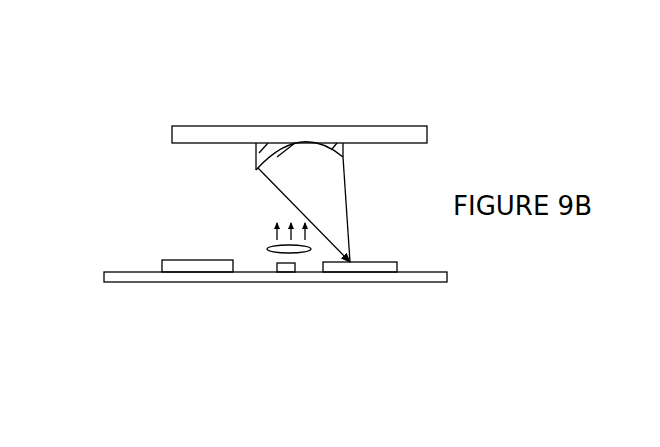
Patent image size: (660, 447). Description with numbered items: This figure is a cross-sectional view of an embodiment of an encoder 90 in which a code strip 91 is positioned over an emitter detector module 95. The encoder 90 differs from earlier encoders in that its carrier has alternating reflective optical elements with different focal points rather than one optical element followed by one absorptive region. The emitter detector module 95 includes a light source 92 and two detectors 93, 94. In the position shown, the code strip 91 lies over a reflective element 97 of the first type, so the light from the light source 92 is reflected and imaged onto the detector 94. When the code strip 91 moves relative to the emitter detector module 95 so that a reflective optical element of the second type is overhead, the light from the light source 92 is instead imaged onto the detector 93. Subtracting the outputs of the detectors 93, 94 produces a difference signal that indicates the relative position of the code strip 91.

The encoder 90 is at (167, 115).
The code strip 91 is at (342, 132).
The light source 92 is at (286, 270).
The detector 93 is at (200, 268).
The detector 94 is at (388, 268).
The emitter detector module 95 is at (420, 280).
The reflective element of the first type 97 is at (256, 162).